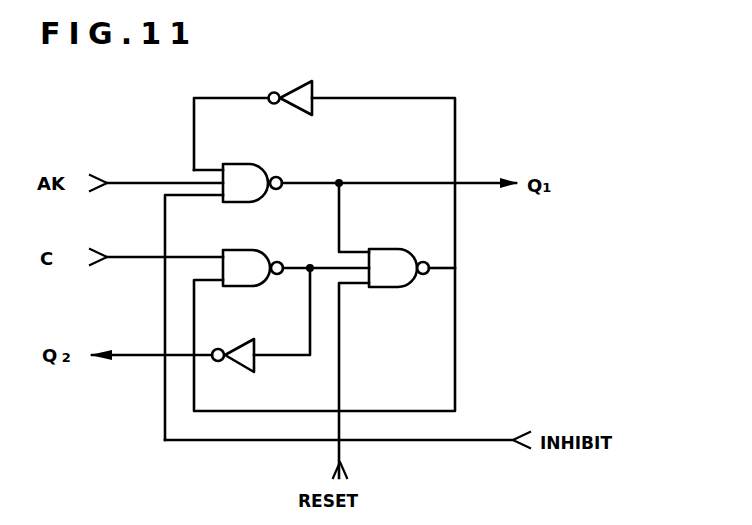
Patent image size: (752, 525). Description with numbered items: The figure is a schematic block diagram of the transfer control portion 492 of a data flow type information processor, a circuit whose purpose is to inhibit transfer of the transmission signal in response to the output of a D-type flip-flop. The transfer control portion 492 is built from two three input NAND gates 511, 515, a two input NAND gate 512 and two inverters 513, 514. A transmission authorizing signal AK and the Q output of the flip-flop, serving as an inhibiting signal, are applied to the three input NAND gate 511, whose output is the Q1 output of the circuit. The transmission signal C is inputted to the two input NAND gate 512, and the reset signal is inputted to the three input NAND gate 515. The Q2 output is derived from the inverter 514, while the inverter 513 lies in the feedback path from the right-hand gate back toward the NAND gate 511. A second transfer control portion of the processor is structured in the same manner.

The transfer control portion 492 is at (540, 58).
The three input NAND gate 511 is at (265, 168).
The two input NAND gate 512 is at (257, 250).
The inverter 513 is at (313, 92).
The inverter 514 is at (250, 339).
The three input NAND gate 515 is at (385, 249).